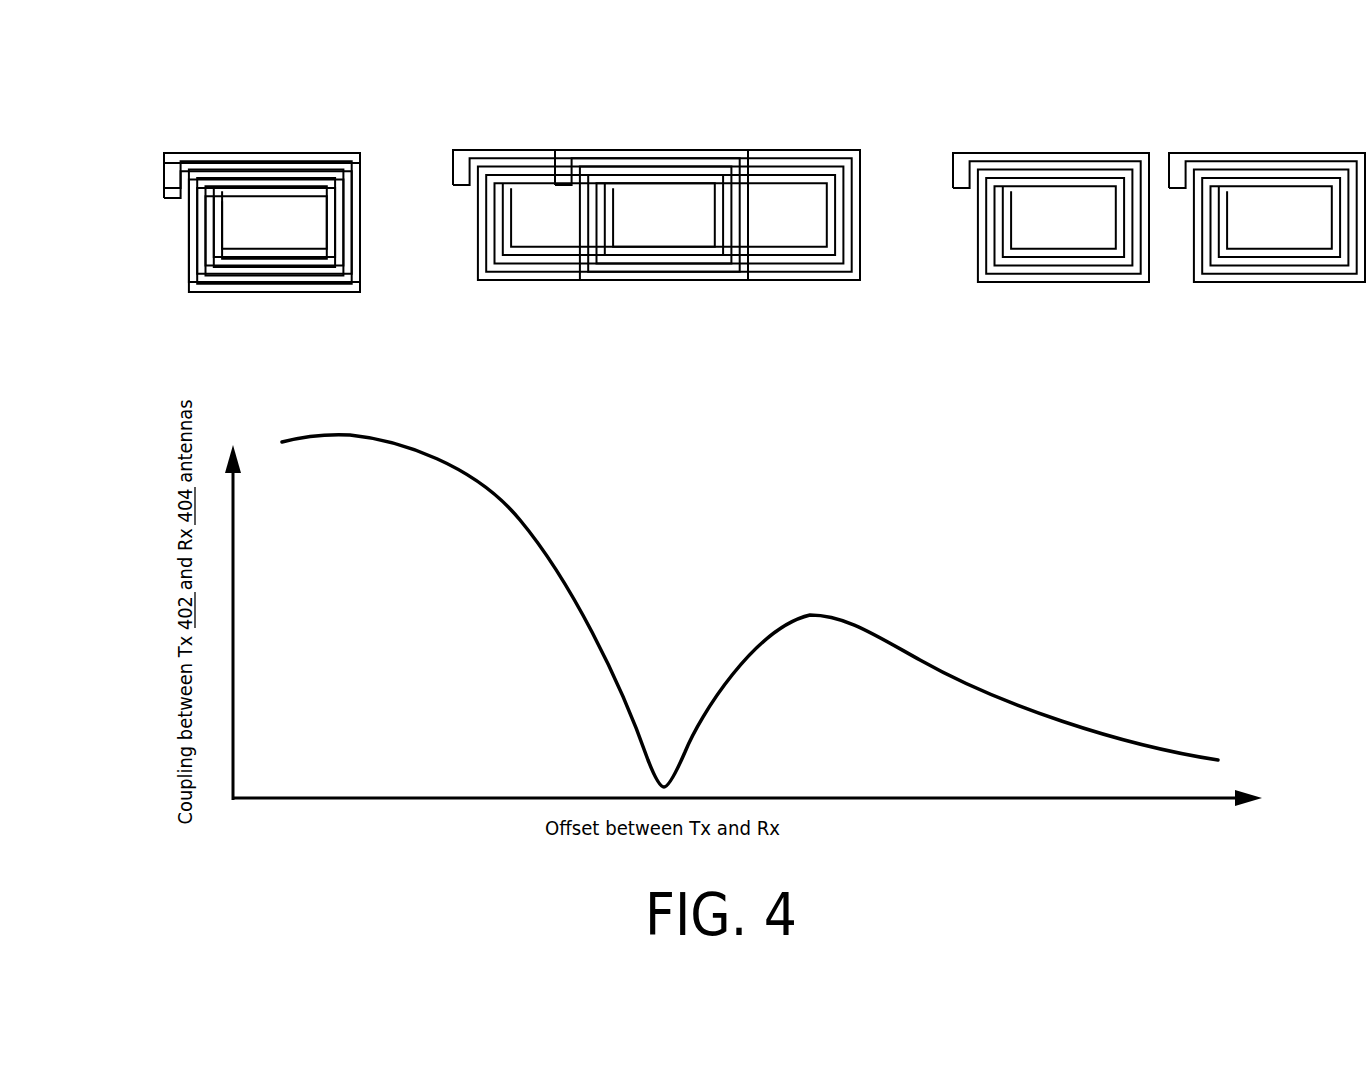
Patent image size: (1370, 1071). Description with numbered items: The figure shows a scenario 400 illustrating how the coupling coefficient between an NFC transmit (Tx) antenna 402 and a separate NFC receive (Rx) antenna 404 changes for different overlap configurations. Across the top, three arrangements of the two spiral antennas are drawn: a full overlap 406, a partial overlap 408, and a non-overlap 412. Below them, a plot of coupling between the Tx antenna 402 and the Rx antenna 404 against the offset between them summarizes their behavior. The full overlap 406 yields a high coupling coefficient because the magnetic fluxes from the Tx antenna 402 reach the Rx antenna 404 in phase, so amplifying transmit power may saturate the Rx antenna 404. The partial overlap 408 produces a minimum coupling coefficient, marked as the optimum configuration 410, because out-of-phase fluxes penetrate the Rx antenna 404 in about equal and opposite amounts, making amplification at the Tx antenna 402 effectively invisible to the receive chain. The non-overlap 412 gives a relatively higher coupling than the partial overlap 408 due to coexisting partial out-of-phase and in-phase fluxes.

The scenario 400 is at (168, 52).
The NFC transmit (Tx) antenna 402 is at (187, 152).
The NFC receive (Rx) antenna 404 is at (167, 193).
The full overlap 406 is at (252, 346).
The partial overlap 408 is at (632, 346).
The optimum configuration 410 is at (668, 770).
The non-overlap 412 is at (1150, 346).